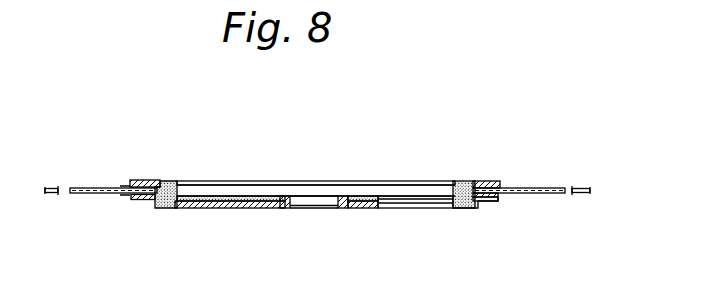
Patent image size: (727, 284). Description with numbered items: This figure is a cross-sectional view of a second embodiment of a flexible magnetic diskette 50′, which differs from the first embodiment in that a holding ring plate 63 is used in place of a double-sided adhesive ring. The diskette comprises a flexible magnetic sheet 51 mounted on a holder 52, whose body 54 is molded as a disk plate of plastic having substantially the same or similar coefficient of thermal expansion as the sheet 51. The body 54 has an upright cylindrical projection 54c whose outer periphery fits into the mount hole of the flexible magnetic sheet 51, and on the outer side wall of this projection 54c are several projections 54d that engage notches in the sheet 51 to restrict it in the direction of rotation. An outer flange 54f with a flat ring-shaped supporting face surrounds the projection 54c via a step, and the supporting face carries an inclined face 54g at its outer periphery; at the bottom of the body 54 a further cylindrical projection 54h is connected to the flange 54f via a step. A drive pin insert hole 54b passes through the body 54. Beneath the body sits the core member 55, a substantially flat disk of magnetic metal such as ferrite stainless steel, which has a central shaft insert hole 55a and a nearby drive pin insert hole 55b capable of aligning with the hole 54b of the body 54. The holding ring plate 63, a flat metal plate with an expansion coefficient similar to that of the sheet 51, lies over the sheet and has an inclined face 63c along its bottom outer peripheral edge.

The diskette 50′ is at (303, 176).
The flexible magnetic sheet 51 is at (101, 184).
The holder 52 is at (180, 125).
The body 54 is at (167, 173).
The drive pin insert hole 54b is at (420, 193).
The cylindrical projection 54c is at (465, 180).
The projections 54d is at (337, 203).
The outer flange 54f is at (493, 203).
The inclined face 54g is at (505, 187).
The cylindrical projection 54h is at (483, 208).
The core member 55 is at (220, 213).
The shaft insert hole 55a is at (298, 202).
The drive pin insert hole 55b is at (407, 203).
The holding ring plate 63 is at (143, 176).
The inclined face 63c is at (128, 198).